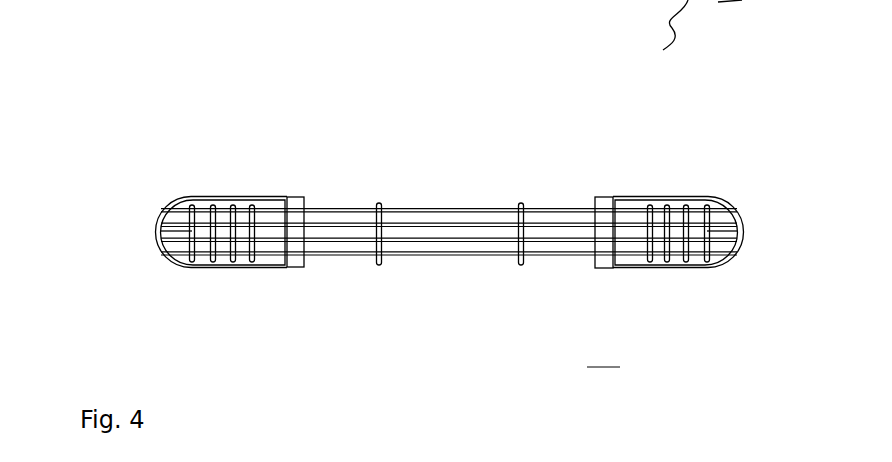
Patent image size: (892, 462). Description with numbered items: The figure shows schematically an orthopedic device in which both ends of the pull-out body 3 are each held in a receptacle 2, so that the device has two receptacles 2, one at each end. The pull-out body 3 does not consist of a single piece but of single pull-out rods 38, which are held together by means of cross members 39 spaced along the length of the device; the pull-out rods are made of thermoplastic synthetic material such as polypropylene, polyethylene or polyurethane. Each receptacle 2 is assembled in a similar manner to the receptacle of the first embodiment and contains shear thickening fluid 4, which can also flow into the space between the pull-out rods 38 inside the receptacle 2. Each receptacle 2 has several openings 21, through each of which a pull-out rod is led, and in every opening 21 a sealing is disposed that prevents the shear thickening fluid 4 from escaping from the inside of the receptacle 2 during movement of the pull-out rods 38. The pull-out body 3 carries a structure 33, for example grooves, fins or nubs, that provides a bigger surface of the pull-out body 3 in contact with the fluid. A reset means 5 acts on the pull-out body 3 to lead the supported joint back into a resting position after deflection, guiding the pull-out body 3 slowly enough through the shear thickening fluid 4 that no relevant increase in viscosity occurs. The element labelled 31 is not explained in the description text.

The receptacle 2 is at (452, 292).
The pull-out body 3 is at (478, 195).
The shear thickening fluid 4 is at (252, 240).
The reset means 5 is at (178, 237).
The opening 21 is at (303, 242).
The first transverse bar 31 is at (195, 248).
The structure 33 is at (233, 257).
The pull-out rod 38 is at (273, 212).
The cross member 39 is at (382, 255).